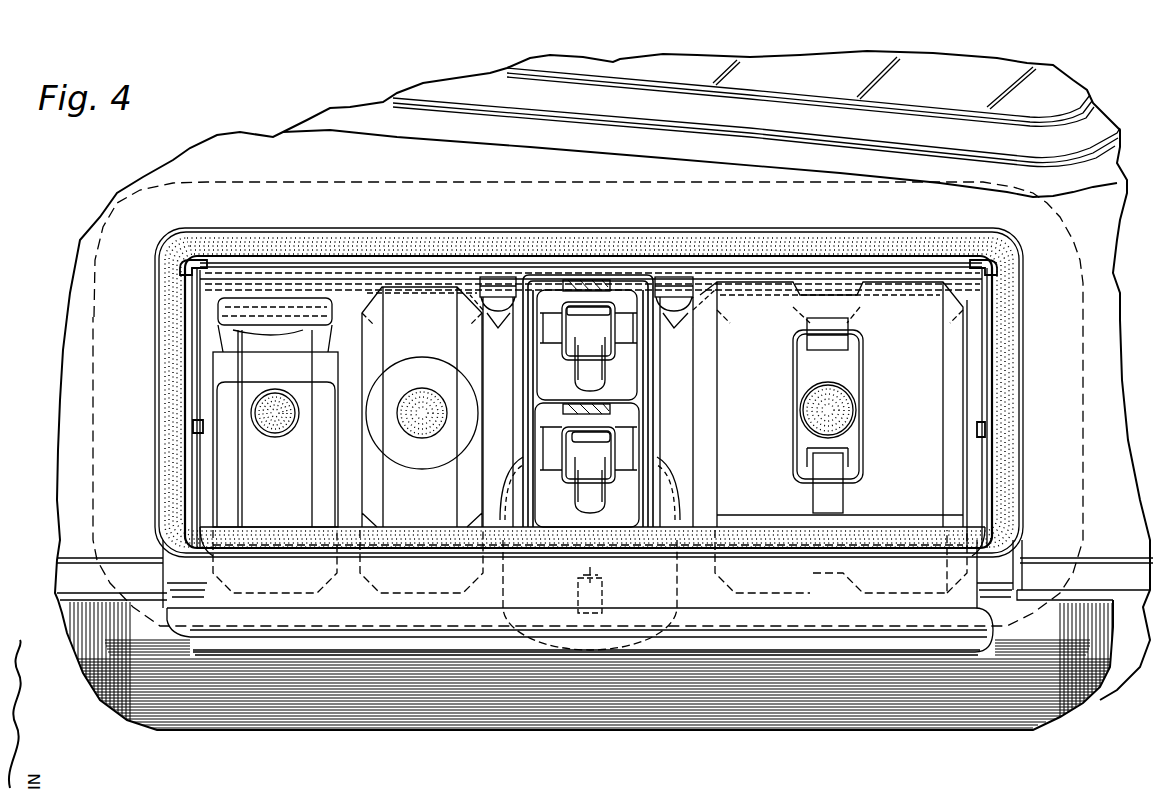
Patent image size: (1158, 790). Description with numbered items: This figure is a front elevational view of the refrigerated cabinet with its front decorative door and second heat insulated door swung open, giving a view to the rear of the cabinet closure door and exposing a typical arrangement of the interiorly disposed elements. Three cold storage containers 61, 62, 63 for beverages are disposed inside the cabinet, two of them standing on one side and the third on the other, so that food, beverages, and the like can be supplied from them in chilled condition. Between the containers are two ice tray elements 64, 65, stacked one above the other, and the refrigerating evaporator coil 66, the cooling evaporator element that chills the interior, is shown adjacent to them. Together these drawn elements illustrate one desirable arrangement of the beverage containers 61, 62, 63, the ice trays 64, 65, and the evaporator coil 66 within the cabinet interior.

The container 61 is at (275, 412).
The container 62 is at (422, 407).
The container 63 is at (831, 404).
The ice tray 64 is at (587, 341).
The ice tray 65 is at (587, 465).
The refrigerating evaporator coil 66 is at (533, 384).